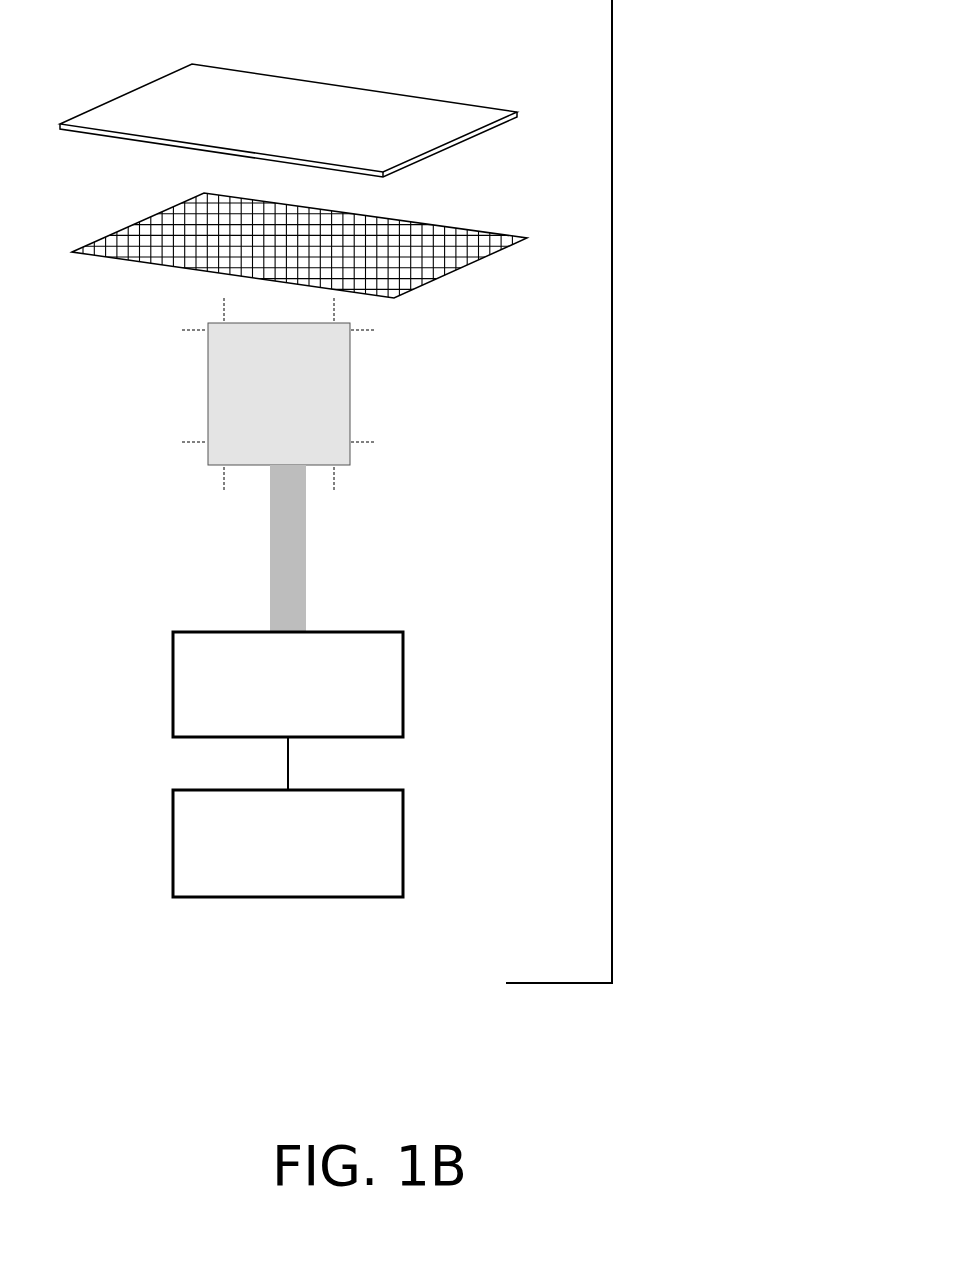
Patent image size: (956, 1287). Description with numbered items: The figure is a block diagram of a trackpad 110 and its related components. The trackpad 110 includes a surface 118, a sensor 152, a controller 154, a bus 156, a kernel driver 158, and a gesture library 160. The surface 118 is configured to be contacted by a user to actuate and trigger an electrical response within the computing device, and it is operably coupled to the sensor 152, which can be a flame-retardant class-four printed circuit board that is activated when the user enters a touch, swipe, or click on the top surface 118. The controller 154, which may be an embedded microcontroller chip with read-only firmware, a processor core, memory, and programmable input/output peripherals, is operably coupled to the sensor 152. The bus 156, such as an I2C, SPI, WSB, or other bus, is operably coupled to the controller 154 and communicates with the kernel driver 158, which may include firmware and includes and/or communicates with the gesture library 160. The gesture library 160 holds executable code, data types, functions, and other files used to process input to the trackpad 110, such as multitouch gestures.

The trackpad 110 is at (612, 457).
The surface 118 is at (428, 99).
The sensor 152 is at (432, 224).
The controller 154 is at (350, 371).
The bus 156 is at (307, 567).
The kernel driver 158 is at (405, 683).
The gesture library 160 is at (405, 842).